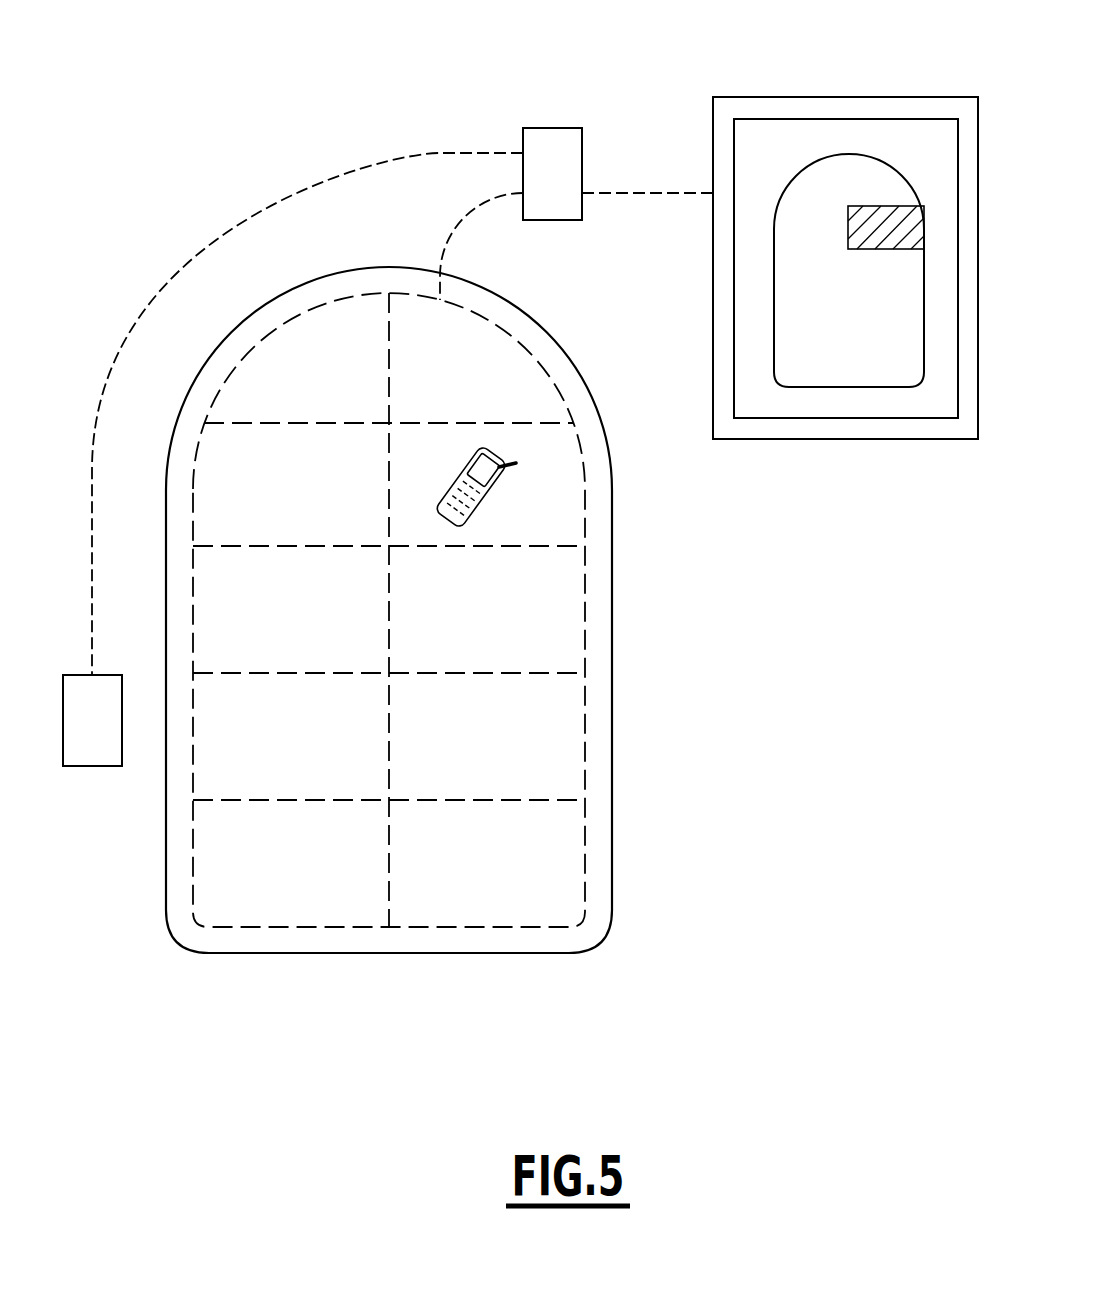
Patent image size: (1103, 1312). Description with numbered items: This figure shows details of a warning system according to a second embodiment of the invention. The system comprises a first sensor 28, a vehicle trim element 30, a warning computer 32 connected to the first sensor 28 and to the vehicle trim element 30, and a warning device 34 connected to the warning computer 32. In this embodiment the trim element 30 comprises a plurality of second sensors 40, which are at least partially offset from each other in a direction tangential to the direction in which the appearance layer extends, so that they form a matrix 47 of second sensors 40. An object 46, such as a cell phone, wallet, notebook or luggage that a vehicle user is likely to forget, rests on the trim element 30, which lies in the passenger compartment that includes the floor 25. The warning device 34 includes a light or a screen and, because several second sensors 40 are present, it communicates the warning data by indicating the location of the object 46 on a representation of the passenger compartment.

The floor 25 is at (560, 872).
The first sensor 28 is at (90, 755).
The vehicle trim element 30 is at (568, 830).
The warning computer 32 is at (549, 143).
The warning device 34 is at (922, 108).
The second sensors 40 is at (239, 800).
The object 46 is at (498, 488).
The matrix 47 is at (372, 940).